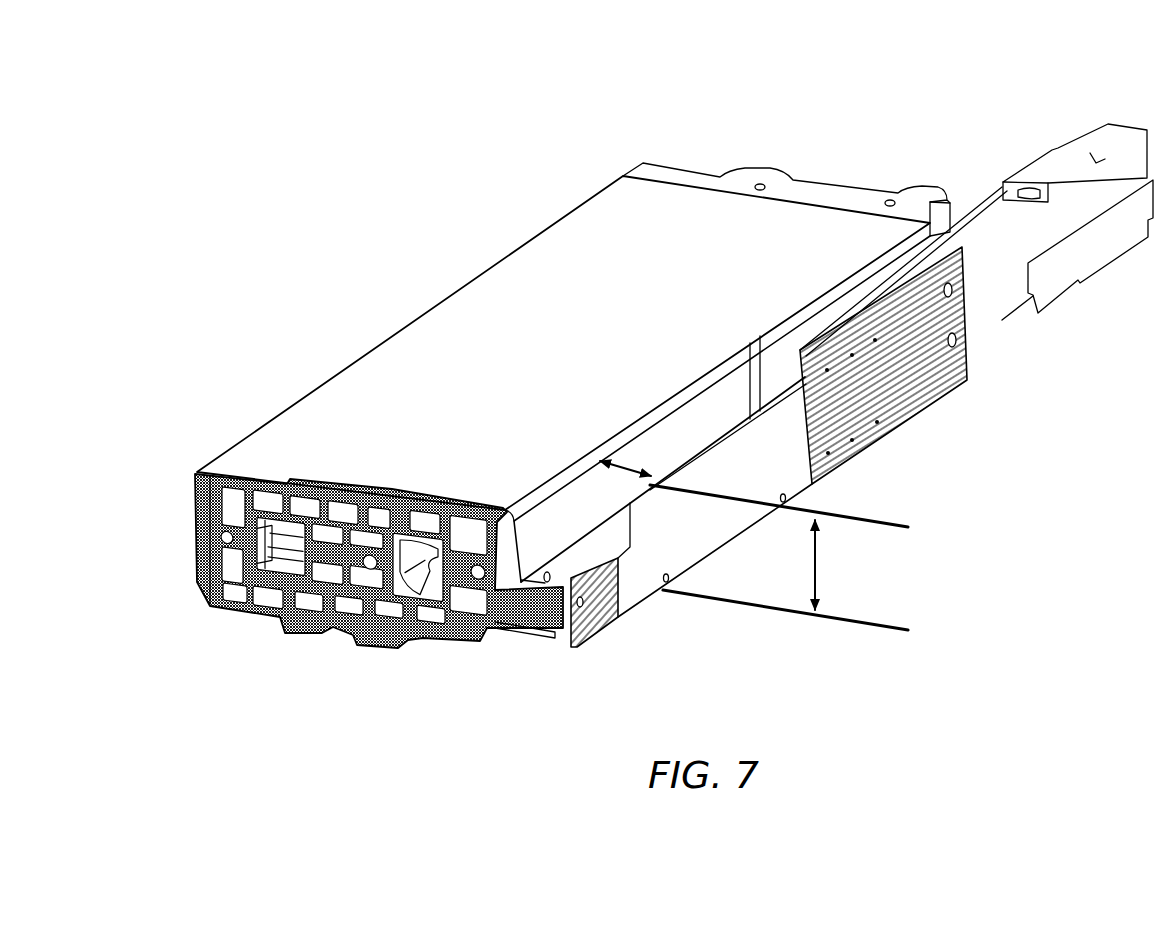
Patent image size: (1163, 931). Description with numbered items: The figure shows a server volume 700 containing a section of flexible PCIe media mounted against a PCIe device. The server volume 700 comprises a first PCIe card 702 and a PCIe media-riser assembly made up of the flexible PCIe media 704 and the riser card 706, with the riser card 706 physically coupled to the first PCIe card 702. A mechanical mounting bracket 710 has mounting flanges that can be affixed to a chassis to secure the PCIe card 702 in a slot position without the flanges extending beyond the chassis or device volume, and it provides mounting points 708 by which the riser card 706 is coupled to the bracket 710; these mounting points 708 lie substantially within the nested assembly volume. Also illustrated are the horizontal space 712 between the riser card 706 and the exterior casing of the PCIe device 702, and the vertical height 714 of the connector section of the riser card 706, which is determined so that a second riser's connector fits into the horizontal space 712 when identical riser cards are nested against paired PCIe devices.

The server volume 700 is at (664, 46).
The first PCIe card 702 is at (308, 407).
The flexible PCIe media 704 is at (993, 298).
The riser card 706 is at (803, 482).
The mounting points 708 is at (590, 616).
The mechanical mounting bracket 710 is at (491, 637).
The horizontal space 712 is at (630, 464).
The vertical height 714 is at (815, 555).